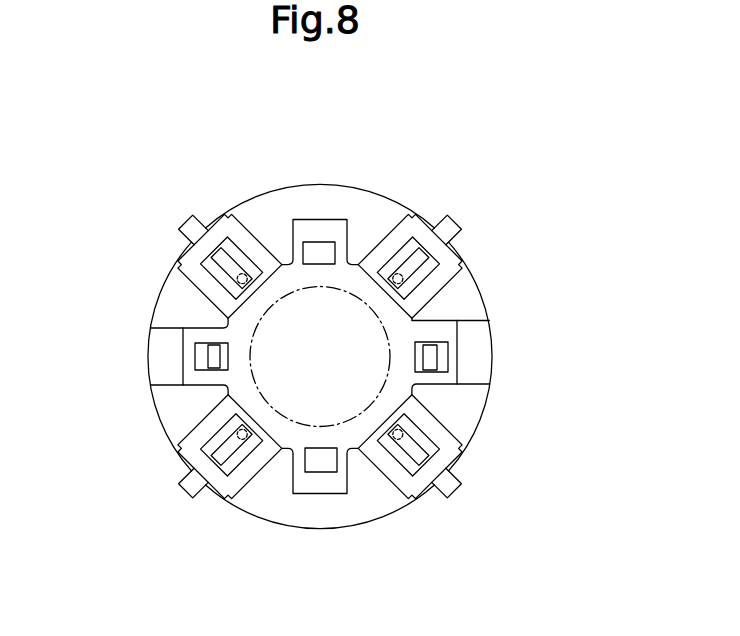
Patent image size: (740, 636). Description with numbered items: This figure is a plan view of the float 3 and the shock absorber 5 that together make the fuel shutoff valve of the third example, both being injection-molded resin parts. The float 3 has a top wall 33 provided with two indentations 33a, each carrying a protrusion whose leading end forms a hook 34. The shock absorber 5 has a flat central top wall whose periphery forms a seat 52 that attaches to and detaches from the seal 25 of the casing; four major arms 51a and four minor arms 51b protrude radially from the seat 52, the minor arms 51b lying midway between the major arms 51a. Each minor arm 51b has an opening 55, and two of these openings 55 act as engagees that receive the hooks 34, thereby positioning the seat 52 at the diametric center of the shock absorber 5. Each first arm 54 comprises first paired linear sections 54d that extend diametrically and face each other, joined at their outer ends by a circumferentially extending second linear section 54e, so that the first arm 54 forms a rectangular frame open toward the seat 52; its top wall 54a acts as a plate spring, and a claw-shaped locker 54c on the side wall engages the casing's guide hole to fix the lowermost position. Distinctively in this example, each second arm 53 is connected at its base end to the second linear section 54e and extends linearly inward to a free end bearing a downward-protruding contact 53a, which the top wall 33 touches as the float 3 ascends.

The float 3 is at (262, 195).
The shock absorber 5 is at (308, 496).
The seal 25 is at (382, 322).
The top wall 33 is at (378, 215).
The indentation 33a is at (472, 348).
The hook 34 is at (208, 378).
The major arm 51a is at (212, 290).
The minor arm 51b is at (318, 240).
The seat 52 is at (302, 468).
The second arm 53 is at (412, 257).
The contact 53a is at (238, 281).
The first arm 54 is at (386, 466).
The top wall 54a is at (457, 447).
The locker 54c is at (190, 228).
The first paired linear section 54d is at (247, 240).
The second linear section 54e is at (213, 230).
The opening 55 is at (196, 344).